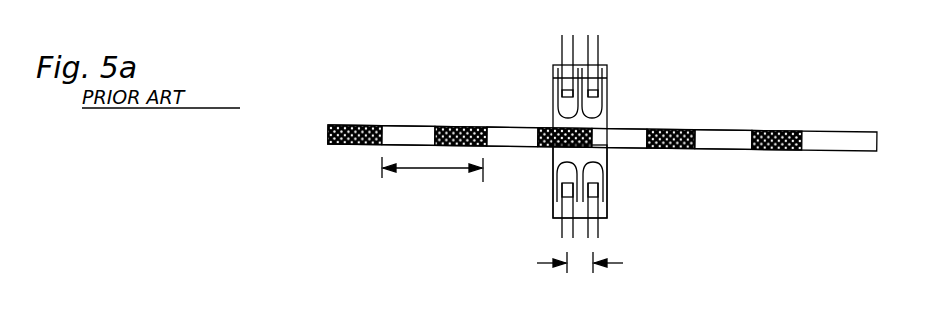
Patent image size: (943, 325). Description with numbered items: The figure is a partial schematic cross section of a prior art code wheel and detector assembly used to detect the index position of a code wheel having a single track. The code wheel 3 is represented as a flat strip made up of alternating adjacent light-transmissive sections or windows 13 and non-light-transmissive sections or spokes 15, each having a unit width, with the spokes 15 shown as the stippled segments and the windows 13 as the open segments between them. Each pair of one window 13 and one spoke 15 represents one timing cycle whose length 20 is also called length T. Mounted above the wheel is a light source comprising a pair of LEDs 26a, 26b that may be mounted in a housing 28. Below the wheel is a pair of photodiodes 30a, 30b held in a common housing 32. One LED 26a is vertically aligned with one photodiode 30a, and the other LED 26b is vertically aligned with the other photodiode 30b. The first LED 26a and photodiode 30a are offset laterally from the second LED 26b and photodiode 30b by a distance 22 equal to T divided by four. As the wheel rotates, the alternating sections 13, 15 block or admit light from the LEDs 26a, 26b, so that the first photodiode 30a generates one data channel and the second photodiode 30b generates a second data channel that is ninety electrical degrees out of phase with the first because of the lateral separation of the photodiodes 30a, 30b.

The code wheel 3 is at (572, 136).
The light-transmissive sections or windows 13 is at (500, 136).
The non-light-transmissive sections or spokes 15 is at (355, 146).
The length of one timing cycle 20 is at (435, 171).
The distance 22 is at (583, 265).
The LED 26a is at (560, 94).
The LED 26b is at (603, 64).
The housing 28 is at (607, 96).
The photodiode 30a is at (557, 190).
The photodiode 30b is at (603, 196).
The common housing 32 is at (603, 164).